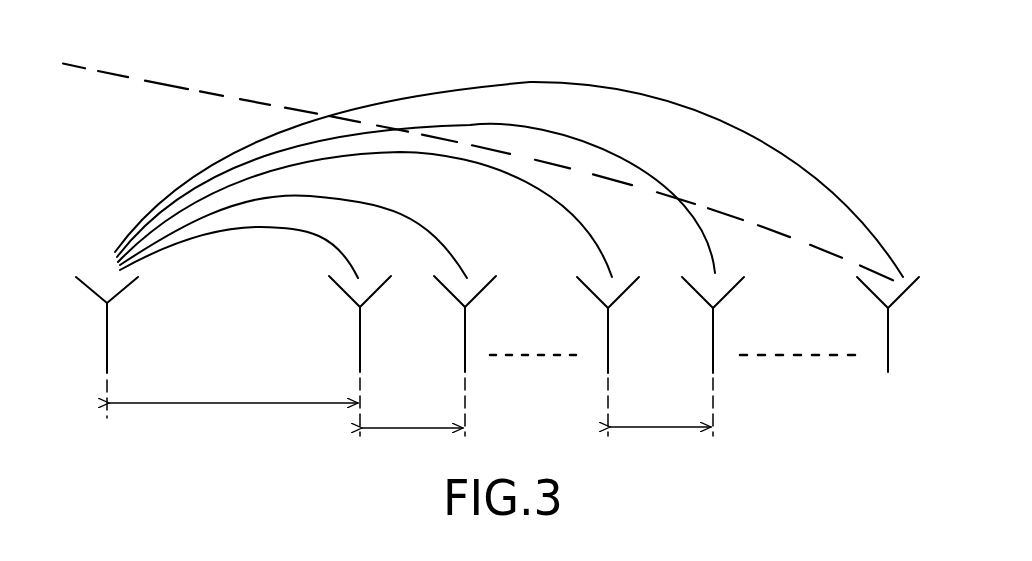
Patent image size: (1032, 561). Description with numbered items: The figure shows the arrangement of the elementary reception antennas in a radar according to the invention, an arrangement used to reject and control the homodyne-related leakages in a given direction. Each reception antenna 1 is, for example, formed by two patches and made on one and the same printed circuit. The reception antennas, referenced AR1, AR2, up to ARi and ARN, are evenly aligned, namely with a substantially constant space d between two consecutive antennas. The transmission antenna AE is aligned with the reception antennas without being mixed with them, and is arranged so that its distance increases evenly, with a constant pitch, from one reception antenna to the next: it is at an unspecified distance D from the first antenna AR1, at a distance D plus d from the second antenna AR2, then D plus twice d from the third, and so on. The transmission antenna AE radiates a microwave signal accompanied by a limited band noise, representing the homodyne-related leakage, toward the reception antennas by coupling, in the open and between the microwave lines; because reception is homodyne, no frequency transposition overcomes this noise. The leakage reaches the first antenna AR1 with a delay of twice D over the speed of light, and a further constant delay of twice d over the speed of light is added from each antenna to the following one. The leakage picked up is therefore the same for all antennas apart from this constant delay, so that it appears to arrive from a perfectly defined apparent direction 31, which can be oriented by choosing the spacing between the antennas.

The apparent direction 31 is at (218, 96).
The transmission antenna AE is at (107, 335).
The reception antenna 1 is at (344, 290).
The first reception antenna AR1 is at (360, 338).
The second reception antenna AR2 is at (465, 323).
The i-th reception antenna ARi is at (608, 328).
The N-th reception antenna ARN is at (888, 335).
The distance D is at (233, 390).
The space d is at (536, 416).